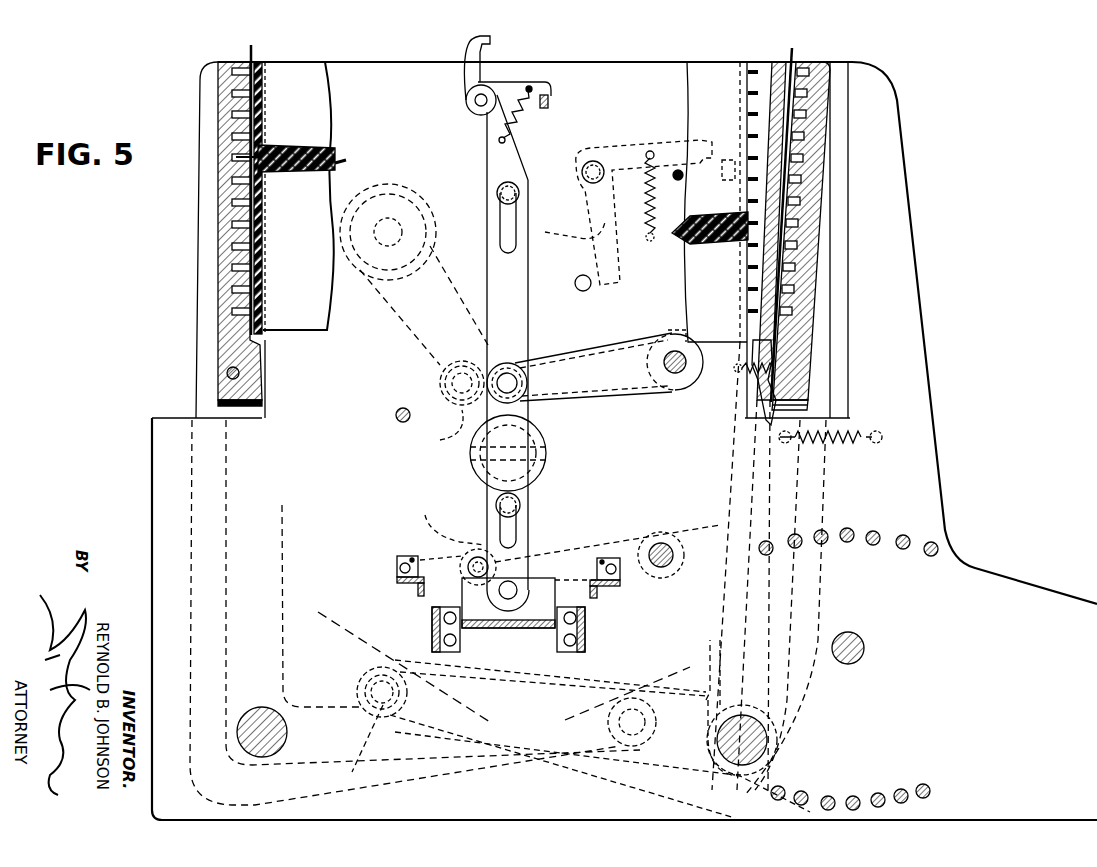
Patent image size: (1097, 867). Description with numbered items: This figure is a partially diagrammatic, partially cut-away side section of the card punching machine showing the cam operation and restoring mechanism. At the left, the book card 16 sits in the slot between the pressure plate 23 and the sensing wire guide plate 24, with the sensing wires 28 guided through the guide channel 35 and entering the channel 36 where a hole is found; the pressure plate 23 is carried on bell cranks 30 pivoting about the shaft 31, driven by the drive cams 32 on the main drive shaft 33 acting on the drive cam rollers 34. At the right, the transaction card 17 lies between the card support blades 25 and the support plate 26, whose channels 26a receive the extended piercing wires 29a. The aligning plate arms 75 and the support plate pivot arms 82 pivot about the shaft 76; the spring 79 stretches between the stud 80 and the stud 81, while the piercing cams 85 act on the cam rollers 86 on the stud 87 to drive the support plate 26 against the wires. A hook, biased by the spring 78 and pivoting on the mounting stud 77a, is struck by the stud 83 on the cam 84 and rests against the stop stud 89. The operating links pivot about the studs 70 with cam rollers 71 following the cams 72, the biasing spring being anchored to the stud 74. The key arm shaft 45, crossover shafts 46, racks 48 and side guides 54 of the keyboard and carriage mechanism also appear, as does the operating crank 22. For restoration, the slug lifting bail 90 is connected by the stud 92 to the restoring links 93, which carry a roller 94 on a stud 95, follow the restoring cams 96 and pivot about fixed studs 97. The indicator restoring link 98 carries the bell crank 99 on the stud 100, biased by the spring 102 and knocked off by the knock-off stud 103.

The book card 16 is at (252, 55).
The transaction card 17 is at (795, 55).
The operating crank 22 is at (398, 322).
The pressure plate 23 is at (220, 64).
The sensing wire guide plate 24 is at (262, 66).
The card support blades 25 is at (776, 62).
The support plate 26 is at (833, 72).
The channels in support plate 26a is at (808, 92).
The sensing wire 28 is at (285, 172).
The piercing wire 29a is at (682, 242).
The bell cranks 30 is at (281, 540).
The shaft 31 is at (282, 722).
The drive cams 32 is at (684, 667).
The main drive shaft 33 is at (546, 452).
The drive cam rollers 34 is at (648, 722).
The guide channel 35 is at (272, 146).
The channel in pressure plate 36 is at (236, 160).
The key arm shaft 45 is at (858, 640).
The crossover shafts 46 is at (930, 542).
The racks 48 is at (400, 582).
The side guides 54 is at (432, 637).
The studs 70 is at (668, 562).
The cam rollers 71 is at (467, 561).
The cams 72 is at (472, 540).
The stud 74 is at (398, 408).
The arms 75 is at (722, 492).
The shaft 76 is at (762, 738).
The mounting stud 77a is at (596, 162).
The spring 78 is at (646, 188).
The spring 79 is at (762, 380).
The stud 80 is at (736, 374).
The stud 81 is at (780, 372).
The support plate pivot arms 82 is at (798, 520).
The stud 83 is at (582, 291).
The cam 84 is at (569, 236).
The piercing cams 85 is at (360, 652).
The cam rollers 86 is at (358, 690).
The stud 87 is at (357, 760).
The stop stud 89 is at (682, 178).
The slug lifting bail 90 is at (538, 590).
The stud 92 is at (512, 384).
The restoring links 93 is at (609, 388).
The roller 94 is at (448, 366).
The stud 95 is at (490, 366).
The restoring cams 96 is at (446, 433).
The fixed studs 97 is at (680, 356).
The indicator restoring link 98 is at (487, 234).
The bell crank 99 is at (476, 62).
The stud 100 is at (474, 100).
The spring 102 is at (521, 114).
The knock-off stud 103 is at (550, 102).